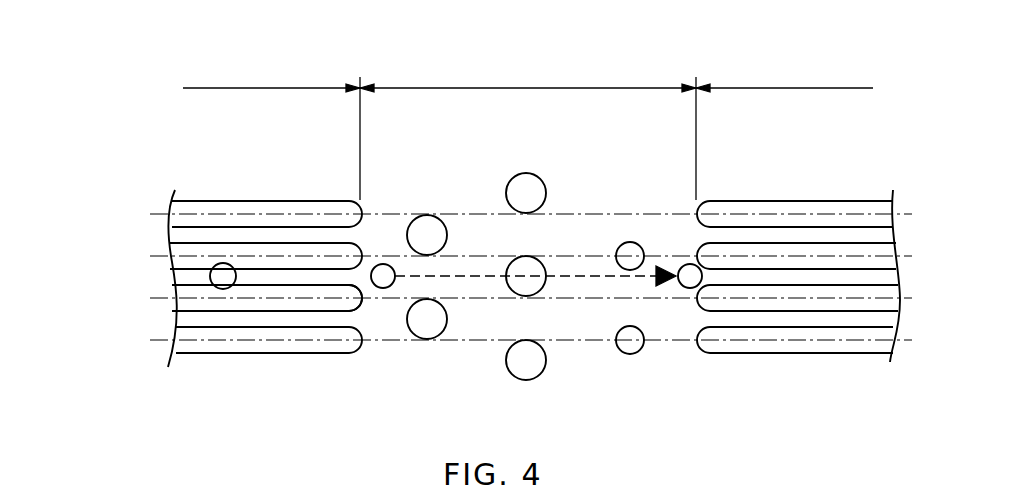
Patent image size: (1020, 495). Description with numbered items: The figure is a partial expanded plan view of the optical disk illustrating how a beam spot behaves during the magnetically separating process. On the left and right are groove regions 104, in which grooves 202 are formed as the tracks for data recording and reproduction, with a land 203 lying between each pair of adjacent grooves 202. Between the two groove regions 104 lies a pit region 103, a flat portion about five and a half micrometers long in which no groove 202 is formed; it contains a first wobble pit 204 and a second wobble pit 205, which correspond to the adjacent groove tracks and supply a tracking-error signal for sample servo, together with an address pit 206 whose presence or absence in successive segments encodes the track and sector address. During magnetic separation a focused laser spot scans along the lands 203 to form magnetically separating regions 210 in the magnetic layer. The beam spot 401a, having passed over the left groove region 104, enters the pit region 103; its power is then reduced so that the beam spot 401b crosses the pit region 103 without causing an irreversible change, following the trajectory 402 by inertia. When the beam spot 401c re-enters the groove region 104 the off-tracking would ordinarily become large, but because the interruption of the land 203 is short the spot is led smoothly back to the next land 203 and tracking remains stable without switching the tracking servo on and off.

The groove region 104 is at (528, 128).
The pit region 103 is at (528, 72).
The groove 202 is at (168, 258).
The land 203 is at (843, 235).
The magnetically separating region 210 is at (267, 318).
The first wobble pit 204 is at (412, 329).
The second wobble pit 205 is at (510, 291).
The address pit 206 is at (638, 352).
The beam spot 401a is at (222, 264).
The beam spot 401b is at (380, 264).
The beam spot 401c is at (687, 263).
The trajectory 402 is at (576, 277).